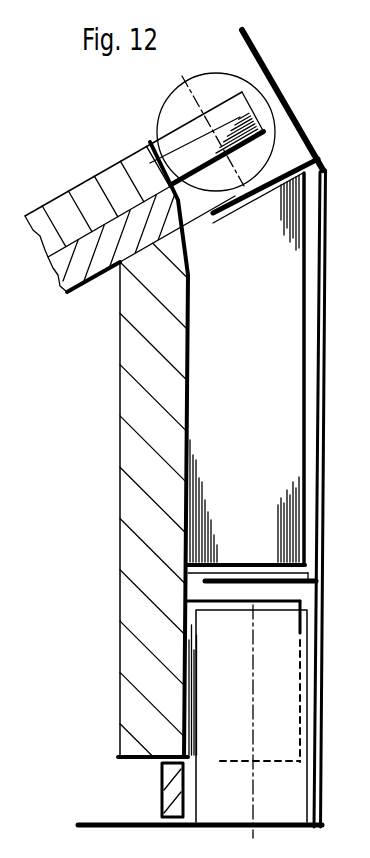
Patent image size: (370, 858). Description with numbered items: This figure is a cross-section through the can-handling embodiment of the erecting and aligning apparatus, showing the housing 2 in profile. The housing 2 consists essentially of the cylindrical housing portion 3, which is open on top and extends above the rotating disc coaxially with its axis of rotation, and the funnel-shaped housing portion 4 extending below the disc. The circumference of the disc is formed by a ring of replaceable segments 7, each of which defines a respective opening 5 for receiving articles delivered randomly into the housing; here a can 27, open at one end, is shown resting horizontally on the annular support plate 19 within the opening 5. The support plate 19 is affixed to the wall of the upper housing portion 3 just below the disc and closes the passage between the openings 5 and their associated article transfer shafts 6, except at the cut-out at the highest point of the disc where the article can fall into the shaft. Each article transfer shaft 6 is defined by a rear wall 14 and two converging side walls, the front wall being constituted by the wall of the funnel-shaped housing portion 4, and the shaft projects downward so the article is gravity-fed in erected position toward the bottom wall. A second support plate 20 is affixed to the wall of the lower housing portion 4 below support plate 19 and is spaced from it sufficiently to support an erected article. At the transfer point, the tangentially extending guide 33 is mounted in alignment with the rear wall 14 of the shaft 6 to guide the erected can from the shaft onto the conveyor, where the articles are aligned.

The housing 2 is at (320, 247).
The cylindrical housing portion 3 is at (230, 112).
The funnel-shaped housing portion 4 is at (320, 450).
The opening 5 is at (232, 108).
The article transfer shaft 6 is at (215, 345).
The segment 7 is at (105, 187).
The rear wall 14 is at (133, 452).
The annular support plate 19 is at (291, 170).
The support plate 20 is at (267, 582).
The can 27 is at (175, 105).
The tangentially extending guide 33 is at (168, 790).